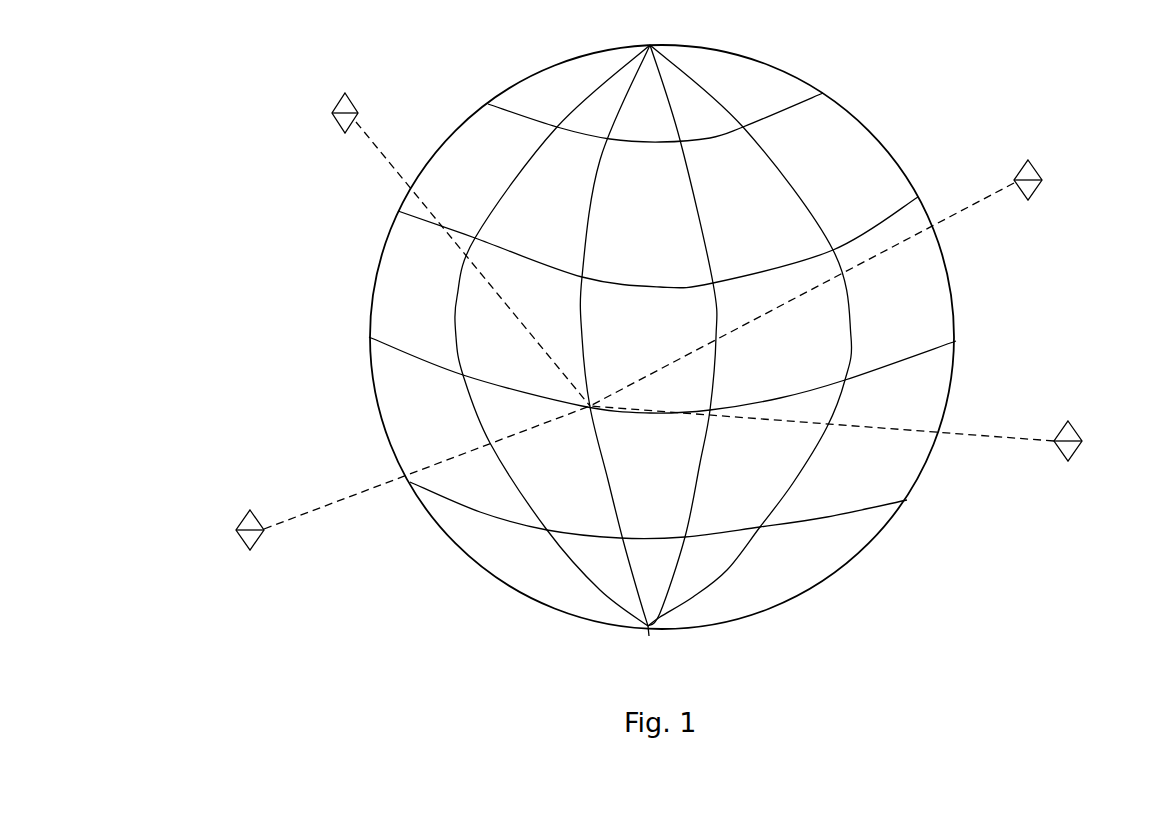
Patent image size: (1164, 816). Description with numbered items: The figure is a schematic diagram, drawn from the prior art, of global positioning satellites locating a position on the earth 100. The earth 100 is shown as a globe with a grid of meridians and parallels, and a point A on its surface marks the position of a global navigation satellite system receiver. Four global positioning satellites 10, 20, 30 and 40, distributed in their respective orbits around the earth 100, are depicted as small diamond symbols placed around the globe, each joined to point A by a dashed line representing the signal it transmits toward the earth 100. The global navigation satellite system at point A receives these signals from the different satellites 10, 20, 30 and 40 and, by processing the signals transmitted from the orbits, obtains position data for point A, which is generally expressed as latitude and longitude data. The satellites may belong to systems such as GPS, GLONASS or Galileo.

The earth 100 is at (793, 73).
The global positioning satellite 10 is at (1035, 158).
The global positioning satellite 20 is at (1072, 421).
The global positioning satellite 30 is at (332, 103).
The global positioning satellite 40 is at (235, 522).